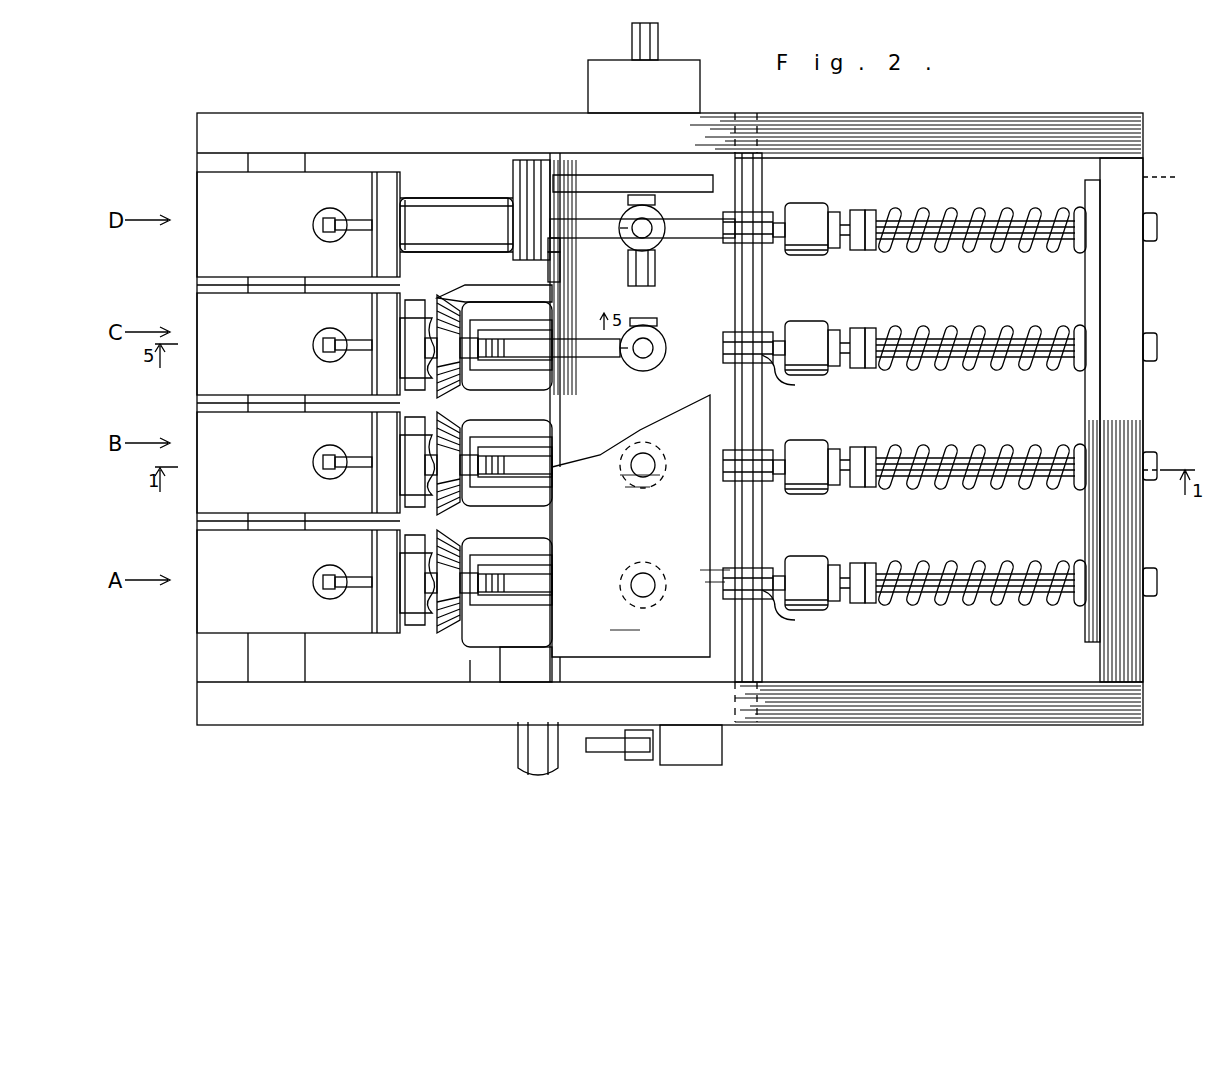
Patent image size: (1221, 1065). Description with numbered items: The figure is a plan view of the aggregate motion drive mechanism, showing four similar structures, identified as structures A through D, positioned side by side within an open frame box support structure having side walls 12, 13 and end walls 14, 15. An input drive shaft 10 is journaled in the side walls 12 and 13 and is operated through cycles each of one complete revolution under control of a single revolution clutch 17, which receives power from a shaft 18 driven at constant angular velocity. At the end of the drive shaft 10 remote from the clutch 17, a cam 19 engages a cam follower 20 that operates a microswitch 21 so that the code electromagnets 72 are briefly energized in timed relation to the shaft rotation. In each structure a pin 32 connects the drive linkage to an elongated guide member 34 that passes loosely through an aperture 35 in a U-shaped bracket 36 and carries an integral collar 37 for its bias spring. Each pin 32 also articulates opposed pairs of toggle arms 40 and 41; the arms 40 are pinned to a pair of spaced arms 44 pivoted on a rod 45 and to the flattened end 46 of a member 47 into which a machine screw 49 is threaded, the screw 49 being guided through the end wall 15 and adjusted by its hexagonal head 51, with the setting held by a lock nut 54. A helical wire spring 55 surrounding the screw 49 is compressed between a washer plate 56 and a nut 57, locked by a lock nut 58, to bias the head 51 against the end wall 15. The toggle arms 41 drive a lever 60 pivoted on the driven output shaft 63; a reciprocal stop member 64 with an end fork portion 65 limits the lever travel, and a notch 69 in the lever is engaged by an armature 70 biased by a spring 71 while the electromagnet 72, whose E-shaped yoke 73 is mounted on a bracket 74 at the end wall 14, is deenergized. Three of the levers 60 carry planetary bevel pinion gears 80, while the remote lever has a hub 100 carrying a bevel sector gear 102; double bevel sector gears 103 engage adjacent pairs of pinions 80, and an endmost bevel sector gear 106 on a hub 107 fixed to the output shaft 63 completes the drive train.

The input drive shaft 10 is at (650, 270).
The side wall 12 is at (835, 712).
The side wall 13 is at (970, 132).
The end wall 14 is at (272, 697).
The end wall 15 is at (1125, 420).
The clutch 17 is at (698, 84).
The shaft 18 is at (655, 40).
The cam 19 is at (592, 758).
The cam follower 20 is at (624, 762).
The microswitch 21 is at (680, 760).
The pin 32 is at (738, 335).
The guide member 34 is at (650, 232).
The aperture 35 is at (646, 478).
The U-shaped bracket 36 is at (700, 632).
The collar 37 is at (660, 210).
The toggle arm 40 is at (690, 232).
The toggle arm 41 is at (610, 220).
The spaced arms 44 is at (784, 378).
The rod 45 is at (755, 668).
The flattened end 46 is at (772, 337).
The member 47 is at (812, 322).
The machine screw 49 is at (992, 342).
The hexagonal head 51 is at (1150, 335).
The lock nut 54 is at (834, 330).
The helical wire spring 55 is at (938, 254).
The washer plate 56 is at (1084, 290).
The nut 57 is at (870, 328).
The lock nut 58 is at (858, 328).
The lever 60 is at (575, 218).
The driven output shaft 63 is at (524, 750).
The stop member 64 is at (442, 612).
The end fork portion 65 is at (560, 245).
The notch 69 is at (528, 385).
The armature 70 is at (516, 215).
The spring 71 is at (322, 236).
The code electromagnet 72 is at (495, 200).
The E-shaped magnetic yoke structure 73 is at (450, 218).
The bracket 74 is at (202, 308).
The planetary bevel pinion gear 80 is at (430, 385).
The hub 100 is at (565, 265).
The bevel sector gear 102 is at (463, 292).
The double bevel sector gear 103 is at (562, 411).
The endmost bevel sector gear 106 is at (455, 690).
The hub 107 is at (530, 668).